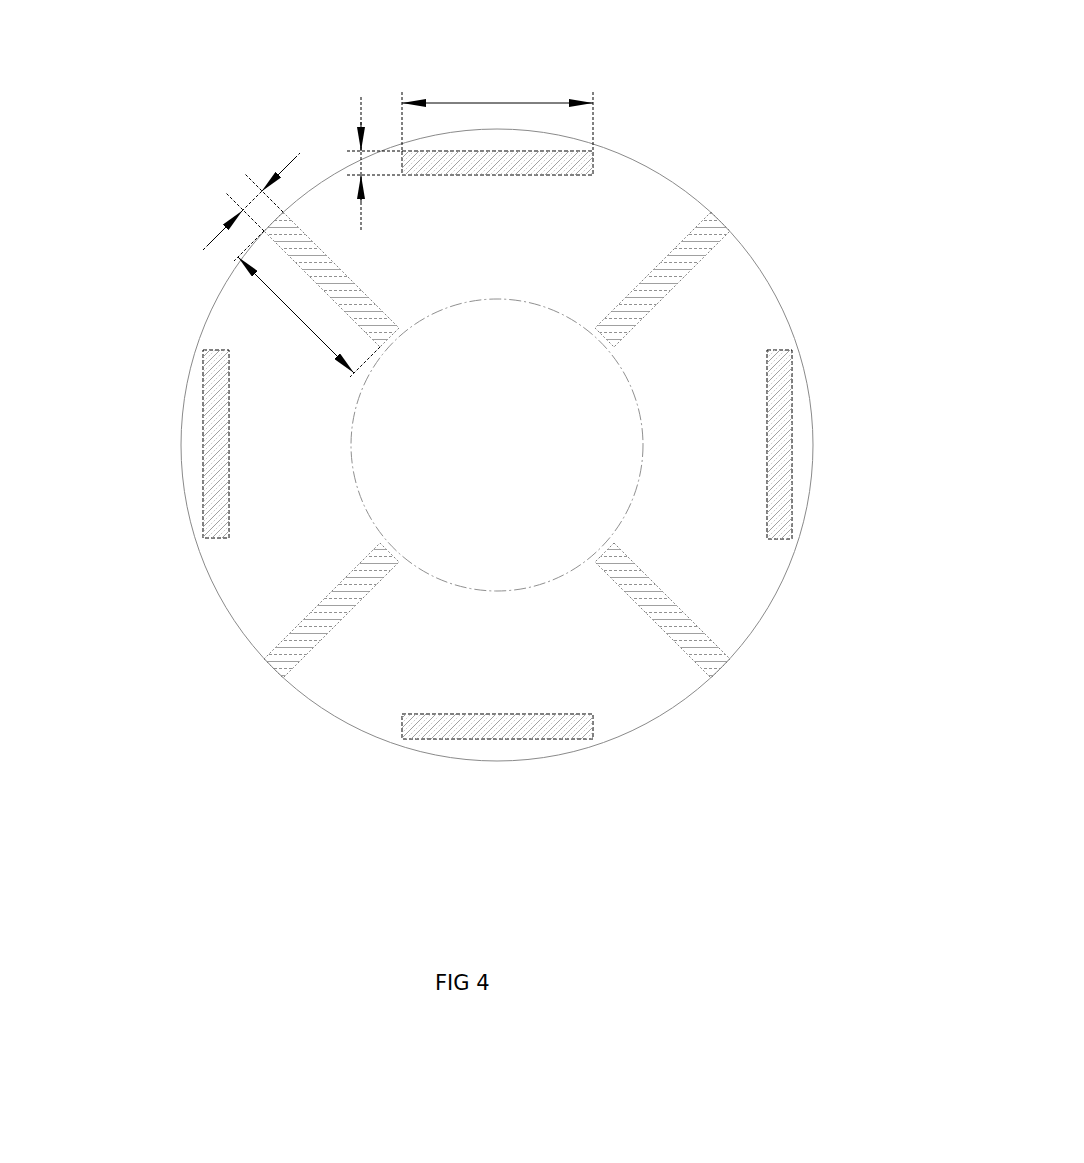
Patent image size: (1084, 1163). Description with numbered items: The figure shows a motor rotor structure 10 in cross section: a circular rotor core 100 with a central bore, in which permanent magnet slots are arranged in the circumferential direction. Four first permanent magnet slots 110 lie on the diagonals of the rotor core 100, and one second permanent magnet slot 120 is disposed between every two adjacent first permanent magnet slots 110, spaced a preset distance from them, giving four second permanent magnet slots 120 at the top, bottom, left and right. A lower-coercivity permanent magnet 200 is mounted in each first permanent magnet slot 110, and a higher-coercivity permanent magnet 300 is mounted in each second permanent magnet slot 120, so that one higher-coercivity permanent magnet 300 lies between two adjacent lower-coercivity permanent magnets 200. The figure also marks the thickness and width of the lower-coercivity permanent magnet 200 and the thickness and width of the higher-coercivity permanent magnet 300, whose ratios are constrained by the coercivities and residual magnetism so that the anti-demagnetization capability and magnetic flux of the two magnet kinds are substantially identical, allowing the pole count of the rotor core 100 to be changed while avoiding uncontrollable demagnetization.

The motor rotor structure 10 is at (127, 32).
The rotor core 100 is at (773, 287).
The first permanent magnet slot 110 is at (675, 229).
The second permanent magnet slot 120 is at (793, 475).
The lower-coercivity permanent magnet 200 is at (690, 250).
The higher-coercivity permanent magnet 300 is at (778, 427).